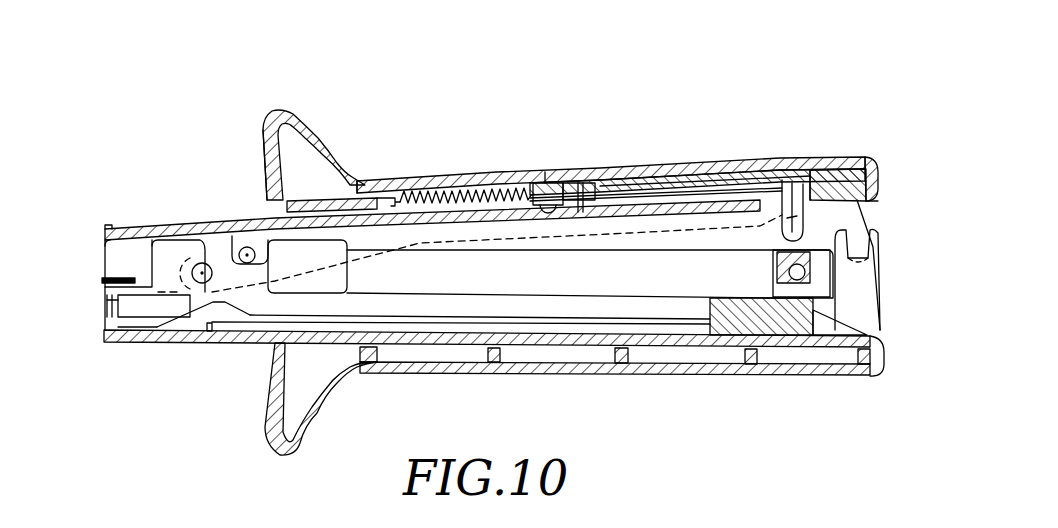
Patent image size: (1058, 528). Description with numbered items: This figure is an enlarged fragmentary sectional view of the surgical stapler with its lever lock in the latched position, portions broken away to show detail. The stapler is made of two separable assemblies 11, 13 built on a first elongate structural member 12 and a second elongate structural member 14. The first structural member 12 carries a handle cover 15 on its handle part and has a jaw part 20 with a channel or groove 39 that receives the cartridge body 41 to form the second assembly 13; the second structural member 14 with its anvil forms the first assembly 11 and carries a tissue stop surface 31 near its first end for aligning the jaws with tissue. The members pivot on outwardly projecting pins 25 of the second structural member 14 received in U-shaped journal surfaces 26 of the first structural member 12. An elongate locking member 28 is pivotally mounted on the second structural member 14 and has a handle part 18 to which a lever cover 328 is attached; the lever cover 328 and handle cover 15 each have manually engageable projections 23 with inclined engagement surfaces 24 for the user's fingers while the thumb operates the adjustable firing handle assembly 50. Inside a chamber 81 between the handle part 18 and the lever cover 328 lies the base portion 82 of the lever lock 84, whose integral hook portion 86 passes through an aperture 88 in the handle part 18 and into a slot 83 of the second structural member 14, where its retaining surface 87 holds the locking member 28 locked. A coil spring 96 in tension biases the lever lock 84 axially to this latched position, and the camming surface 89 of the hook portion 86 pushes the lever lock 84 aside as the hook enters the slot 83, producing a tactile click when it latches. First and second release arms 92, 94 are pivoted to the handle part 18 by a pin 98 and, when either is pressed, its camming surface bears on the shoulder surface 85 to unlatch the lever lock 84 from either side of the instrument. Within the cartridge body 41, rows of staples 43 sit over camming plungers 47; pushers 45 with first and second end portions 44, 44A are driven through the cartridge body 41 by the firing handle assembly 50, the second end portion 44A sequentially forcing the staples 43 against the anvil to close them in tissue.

The first separable assembly 11 is at (498, 163).
The first elongate structural member 12 is at (545, 348).
The second separable assembly 13 is at (712, 380).
The second elongate structural member 14 is at (560, 255).
The handle cover 15 is at (402, 376).
The handle part 18 is at (384, 197).
The jaw part 20 is at (162, 345).
The manually engageable projections 23 is at (287, 110).
The engagement surfaces 24 is at (265, 148).
The pins 25 is at (873, 279).
The U-shaped journal surfaces 26 is at (873, 249).
The elongate locking member 28 is at (359, 178).
The tissue stop surface 31 is at (153, 228).
The channel or groove 39 is at (115, 332).
The cartridge body 41 is at (137, 310).
The staples 43 is at (103, 295).
The first end portion 44 is at (672, 328).
The second end portion 44A is at (190, 325).
The pushers 45 is at (262, 325).
The camming plungers 47 is at (112, 312).
The adjustable firing handle assembly 50 is at (890, 314).
The chamber 81 is at (872, 156).
The base portion 82 is at (738, 168).
The slot 83 is at (857, 168).
The lever lock 84 is at (685, 168).
The shoulder surface 85 is at (784, 176).
The hook portion 86 is at (833, 168).
The retaining surface 87 is at (771, 168).
The aperture 88 is at (878, 199).
The camming surface 89 is at (777, 247).
The first release arm 92 is at (625, 182).
The second release arm 94 is at (640, 186).
The coil spring 96 is at (457, 190).
The pin 98 is at (599, 182).
The lever cover 328 is at (546, 170).